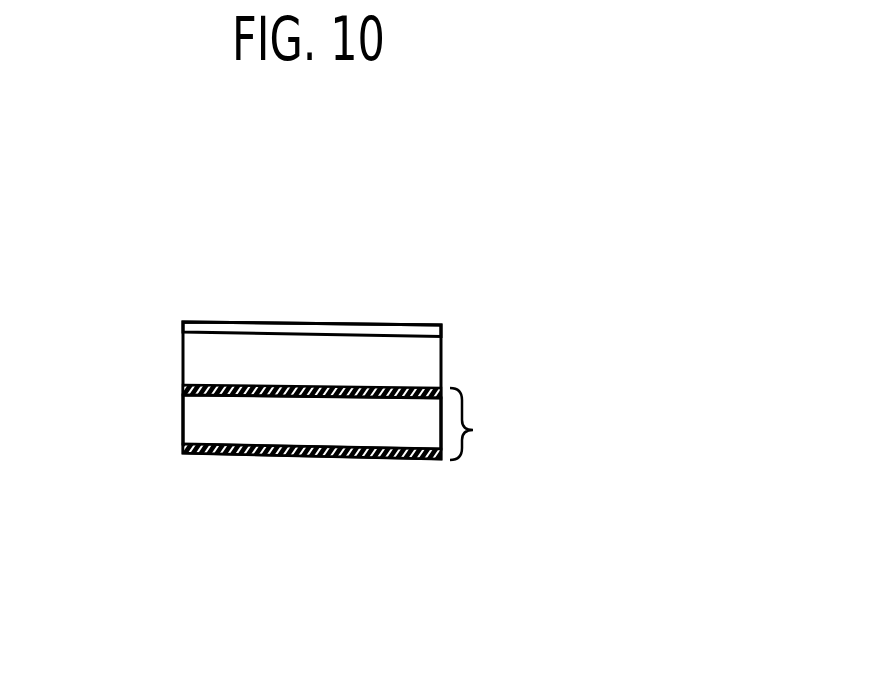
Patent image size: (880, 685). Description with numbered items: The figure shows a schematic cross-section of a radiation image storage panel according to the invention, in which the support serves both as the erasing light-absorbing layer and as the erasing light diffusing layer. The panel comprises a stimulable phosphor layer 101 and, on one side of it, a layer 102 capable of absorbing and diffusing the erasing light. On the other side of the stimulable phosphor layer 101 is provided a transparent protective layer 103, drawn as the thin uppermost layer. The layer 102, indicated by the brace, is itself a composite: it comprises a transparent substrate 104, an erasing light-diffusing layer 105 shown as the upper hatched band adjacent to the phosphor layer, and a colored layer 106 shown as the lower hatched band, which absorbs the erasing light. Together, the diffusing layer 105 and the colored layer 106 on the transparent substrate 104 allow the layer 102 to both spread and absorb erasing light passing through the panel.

The stimulable phosphor layer 101 is at (442, 363).
The layer capable of absorbing and diffusing the erasing light 102 is at (497, 424).
The transparent protective layer 103 is at (410, 324).
The transparent substrate 104 is at (182, 413).
The erasing light-diffusing layer 105 is at (183, 388).
The colored layer 106 is at (187, 457).